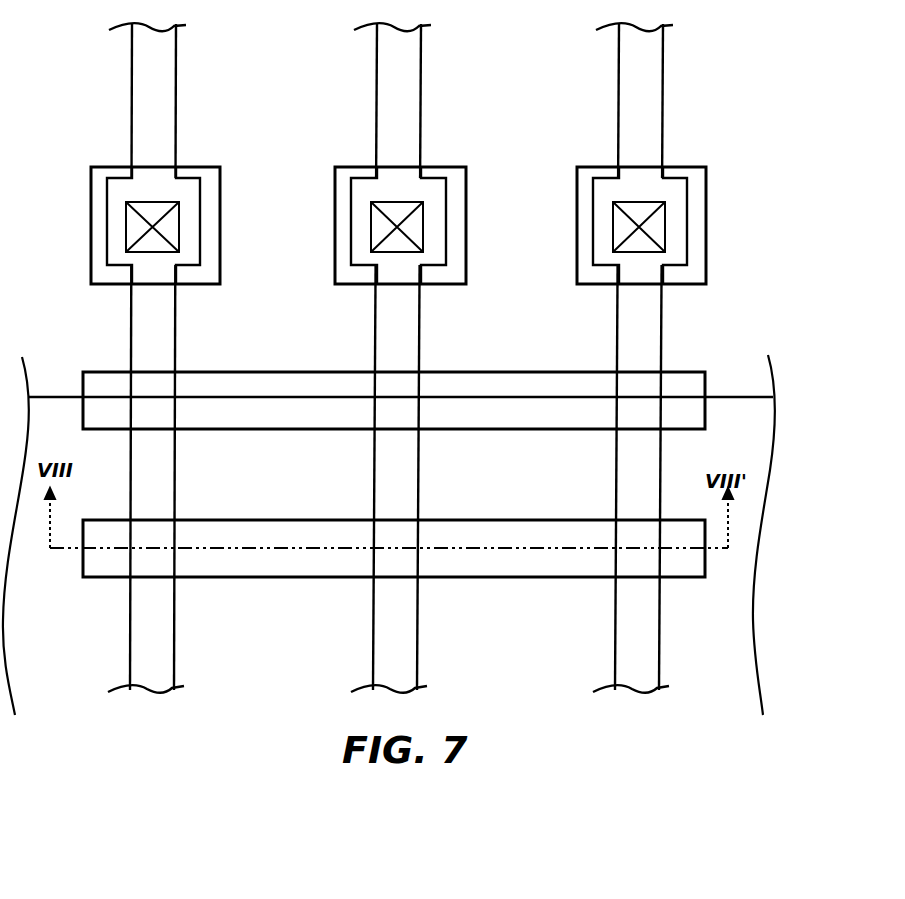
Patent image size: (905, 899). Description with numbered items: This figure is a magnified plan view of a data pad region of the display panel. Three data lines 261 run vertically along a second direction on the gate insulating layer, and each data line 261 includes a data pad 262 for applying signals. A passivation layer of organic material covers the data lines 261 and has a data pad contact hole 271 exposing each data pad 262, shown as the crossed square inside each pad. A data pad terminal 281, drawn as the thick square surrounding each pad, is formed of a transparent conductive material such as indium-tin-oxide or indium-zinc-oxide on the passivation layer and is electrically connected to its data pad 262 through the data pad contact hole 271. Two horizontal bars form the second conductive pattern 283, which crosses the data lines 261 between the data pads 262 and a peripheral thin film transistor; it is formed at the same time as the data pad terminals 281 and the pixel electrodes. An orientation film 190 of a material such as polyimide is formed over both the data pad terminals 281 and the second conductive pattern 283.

The orientation film 190 is at (743, 447).
The data line 261 is at (135, 333).
The data pad 262 is at (106, 212).
The data pad contact hole 271 is at (177, 218).
The data pad terminal 281 is at (190, 166).
The second conductive pattern 283 is at (270, 415).